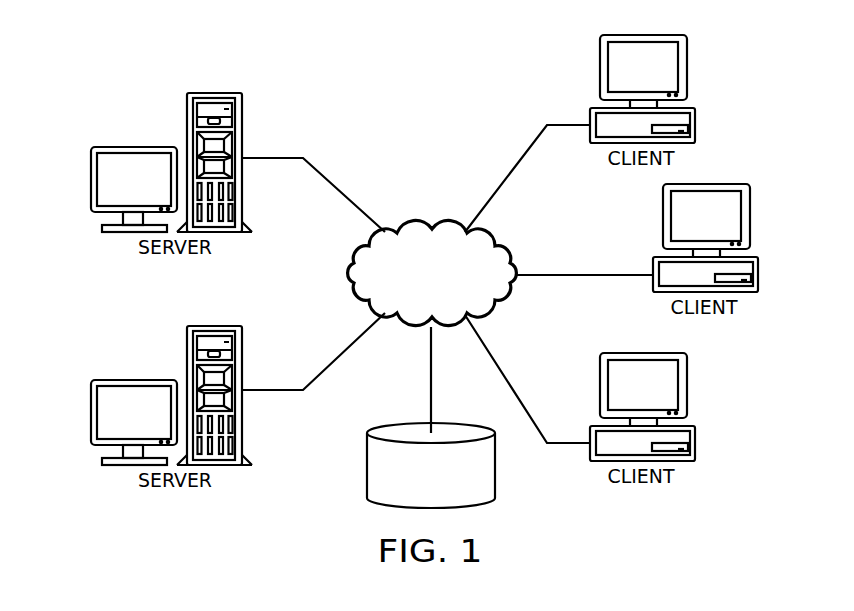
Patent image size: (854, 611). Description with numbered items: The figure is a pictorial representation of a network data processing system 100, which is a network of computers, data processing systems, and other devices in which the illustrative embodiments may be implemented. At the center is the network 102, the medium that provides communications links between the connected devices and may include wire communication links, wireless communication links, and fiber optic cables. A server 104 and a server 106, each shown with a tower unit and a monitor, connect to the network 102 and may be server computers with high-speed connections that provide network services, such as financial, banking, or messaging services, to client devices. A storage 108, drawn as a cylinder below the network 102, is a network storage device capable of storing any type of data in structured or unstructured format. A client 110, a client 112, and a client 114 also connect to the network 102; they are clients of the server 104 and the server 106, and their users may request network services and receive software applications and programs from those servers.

The network data processing system 100 is at (313, 81).
The network 102 is at (404, 226).
The server 104 is at (90, 408).
The server 106 is at (90, 180).
The storage 108 is at (367, 462).
The client 110 is at (698, 118).
The client 112 is at (762, 285).
The client 114 is at (698, 450).